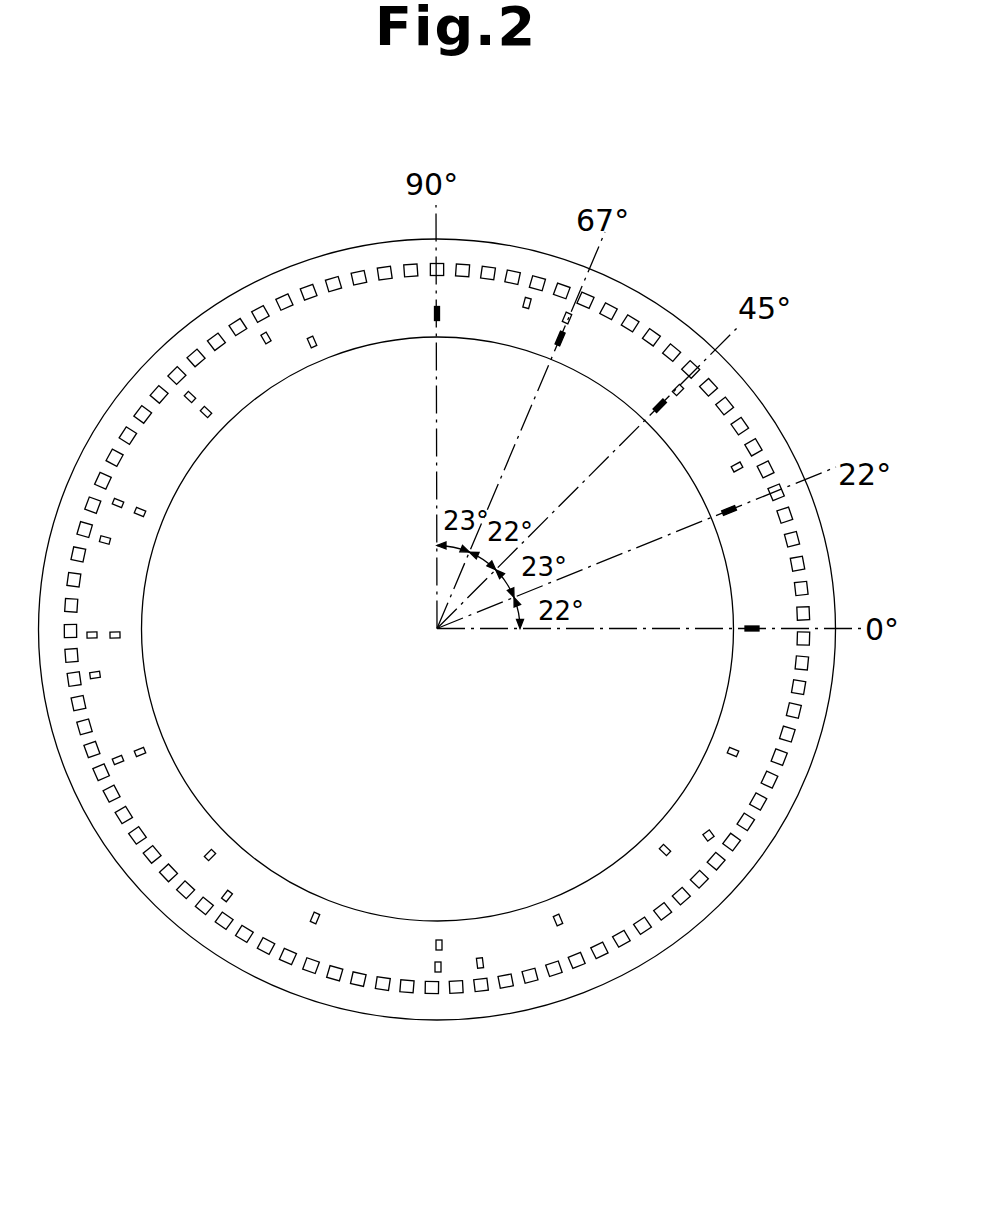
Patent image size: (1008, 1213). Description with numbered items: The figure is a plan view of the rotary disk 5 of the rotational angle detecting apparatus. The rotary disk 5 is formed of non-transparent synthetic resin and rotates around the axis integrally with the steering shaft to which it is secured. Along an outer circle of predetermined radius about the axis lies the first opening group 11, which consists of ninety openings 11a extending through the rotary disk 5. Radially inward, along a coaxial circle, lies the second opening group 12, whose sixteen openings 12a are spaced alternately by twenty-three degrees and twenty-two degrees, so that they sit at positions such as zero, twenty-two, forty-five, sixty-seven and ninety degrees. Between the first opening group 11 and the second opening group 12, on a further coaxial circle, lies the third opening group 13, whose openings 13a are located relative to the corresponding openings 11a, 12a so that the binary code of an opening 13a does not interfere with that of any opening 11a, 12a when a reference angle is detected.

The rotary disk 5 is at (713, 897).
The first opening group 11 is at (777, 783).
The openings 11a is at (795, 736).
The second opening group 12 is at (437, 940).
The openings 12a is at (558, 920).
The third opening group 13 is at (705, 833).
The openings 13a is at (707, 836).